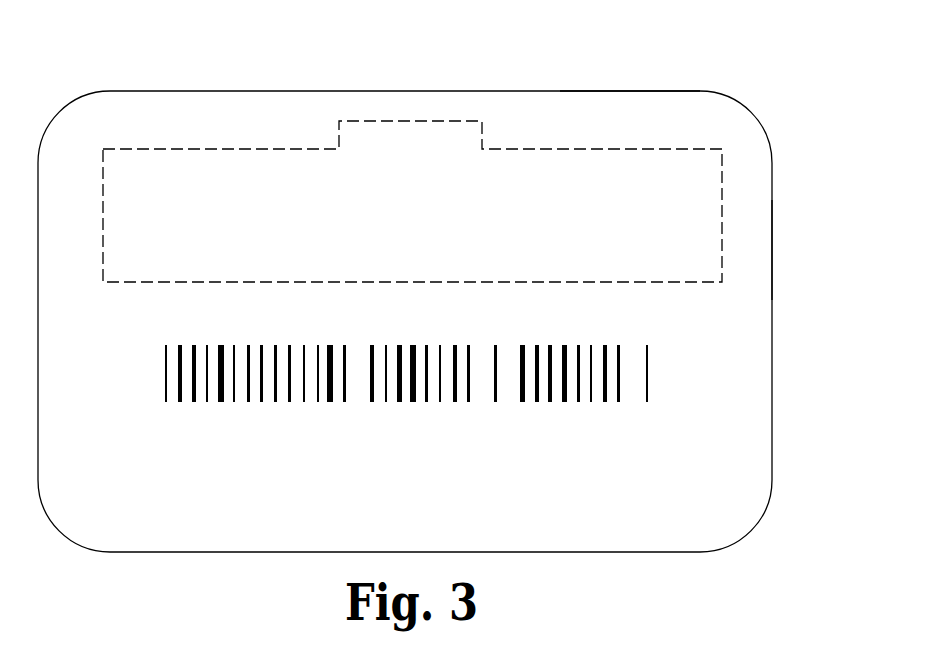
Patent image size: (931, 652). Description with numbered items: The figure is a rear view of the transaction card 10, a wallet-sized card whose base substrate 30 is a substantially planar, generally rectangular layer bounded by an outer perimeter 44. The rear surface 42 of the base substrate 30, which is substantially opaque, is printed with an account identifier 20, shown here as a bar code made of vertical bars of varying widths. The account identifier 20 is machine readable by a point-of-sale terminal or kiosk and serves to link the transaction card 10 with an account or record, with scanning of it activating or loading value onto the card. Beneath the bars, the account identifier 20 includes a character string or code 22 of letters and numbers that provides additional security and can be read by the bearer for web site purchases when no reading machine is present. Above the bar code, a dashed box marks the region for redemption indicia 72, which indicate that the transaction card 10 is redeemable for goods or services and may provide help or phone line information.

The transaction card 10 is at (104, 54).
The account identifier 20 is at (647, 368).
The character string or code 22 is at (645, 432).
The base substrate 30 is at (600, 120).
The rear surface 42 is at (690, 120).
The outer perimeter 44 is at (772, 251).
The redemption indicia 72 is at (722, 184).